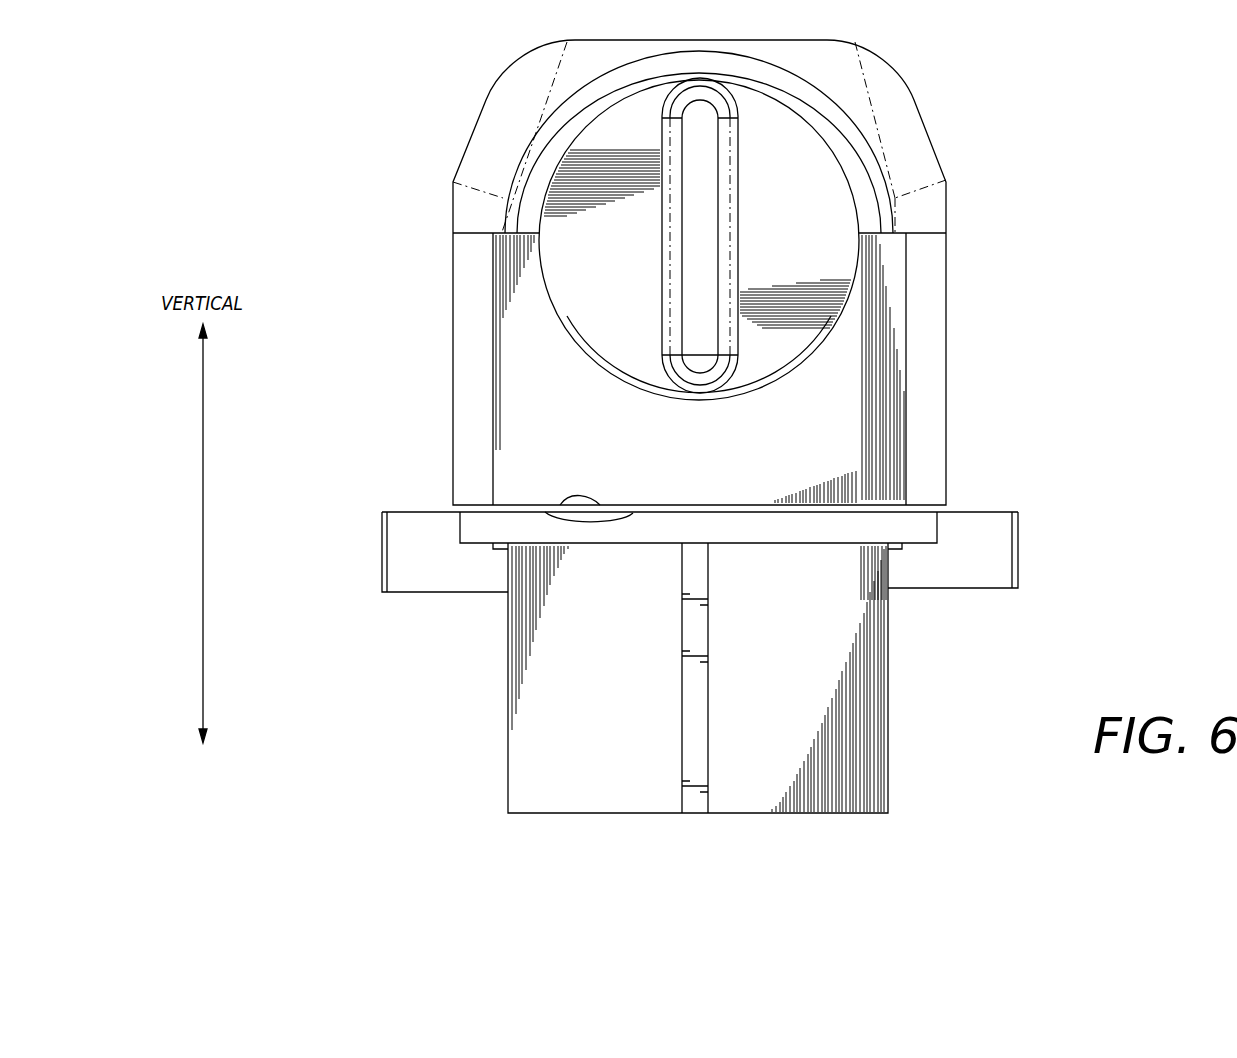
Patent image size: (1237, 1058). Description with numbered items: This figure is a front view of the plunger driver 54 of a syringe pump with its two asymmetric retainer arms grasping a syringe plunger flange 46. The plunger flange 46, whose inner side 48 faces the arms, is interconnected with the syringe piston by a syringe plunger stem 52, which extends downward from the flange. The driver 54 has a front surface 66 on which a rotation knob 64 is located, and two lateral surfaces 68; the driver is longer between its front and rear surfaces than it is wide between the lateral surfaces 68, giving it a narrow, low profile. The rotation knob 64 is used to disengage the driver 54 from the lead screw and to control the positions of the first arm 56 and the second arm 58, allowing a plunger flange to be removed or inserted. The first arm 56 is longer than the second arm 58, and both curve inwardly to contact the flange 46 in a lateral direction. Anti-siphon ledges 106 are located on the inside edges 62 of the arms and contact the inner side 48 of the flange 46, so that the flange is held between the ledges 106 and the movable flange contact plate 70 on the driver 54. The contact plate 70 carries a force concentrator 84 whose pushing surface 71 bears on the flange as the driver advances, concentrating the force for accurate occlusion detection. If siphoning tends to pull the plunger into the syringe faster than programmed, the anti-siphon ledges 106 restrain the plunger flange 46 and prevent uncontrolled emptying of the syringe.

The syringe plunger flange 46 is at (475, 527).
The inner side 48 is at (833, 543).
The syringe plunger stem 52 is at (530, 755).
The plunger driver 54 is at (453, 226).
The first arm 56 is at (1018, 548).
The second arm 58 is at (382, 553).
The inside edge 62 is at (508, 592).
The rotation knob 64 is at (660, 152).
The front surface 66 is at (545, 362).
The lateral surfaces 68 is at (453, 378).
The movable flange contact plate 70 is at (582, 508).
The pushing surface 71 is at (545, 512).
The force concentrator 84 is at (757, 507).
The anti-siphon ledges 106 is at (487, 567).